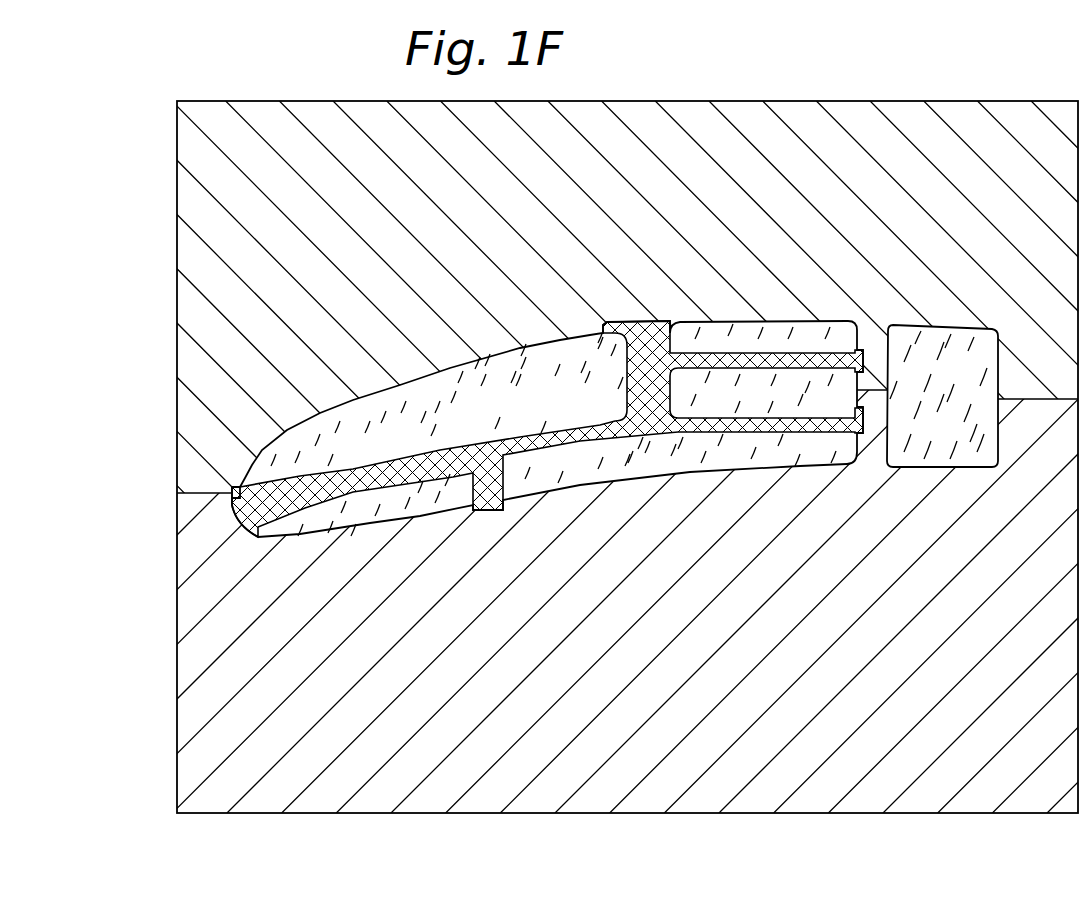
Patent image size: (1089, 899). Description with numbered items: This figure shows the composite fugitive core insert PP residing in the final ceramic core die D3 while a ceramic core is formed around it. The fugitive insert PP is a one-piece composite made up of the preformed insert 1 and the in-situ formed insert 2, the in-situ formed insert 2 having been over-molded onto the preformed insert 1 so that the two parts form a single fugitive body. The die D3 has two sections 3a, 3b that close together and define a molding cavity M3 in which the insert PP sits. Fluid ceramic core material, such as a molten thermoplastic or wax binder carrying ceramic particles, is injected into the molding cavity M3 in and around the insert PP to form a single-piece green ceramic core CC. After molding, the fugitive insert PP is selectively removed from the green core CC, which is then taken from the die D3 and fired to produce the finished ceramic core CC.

The preformed insert 1 is at (656, 366).
The in-situ formed insert 2 is at (345, 462).
The die section 3a is at (544, 457).
The die section 3b is at (544, 457).
The molding cavity M3 is at (388, 383).
The composite fugitive core insert PP is at (588, 414).
The final ceramic core die D3 is at (157, 521).
The ceramic core CC is at (353, 513).